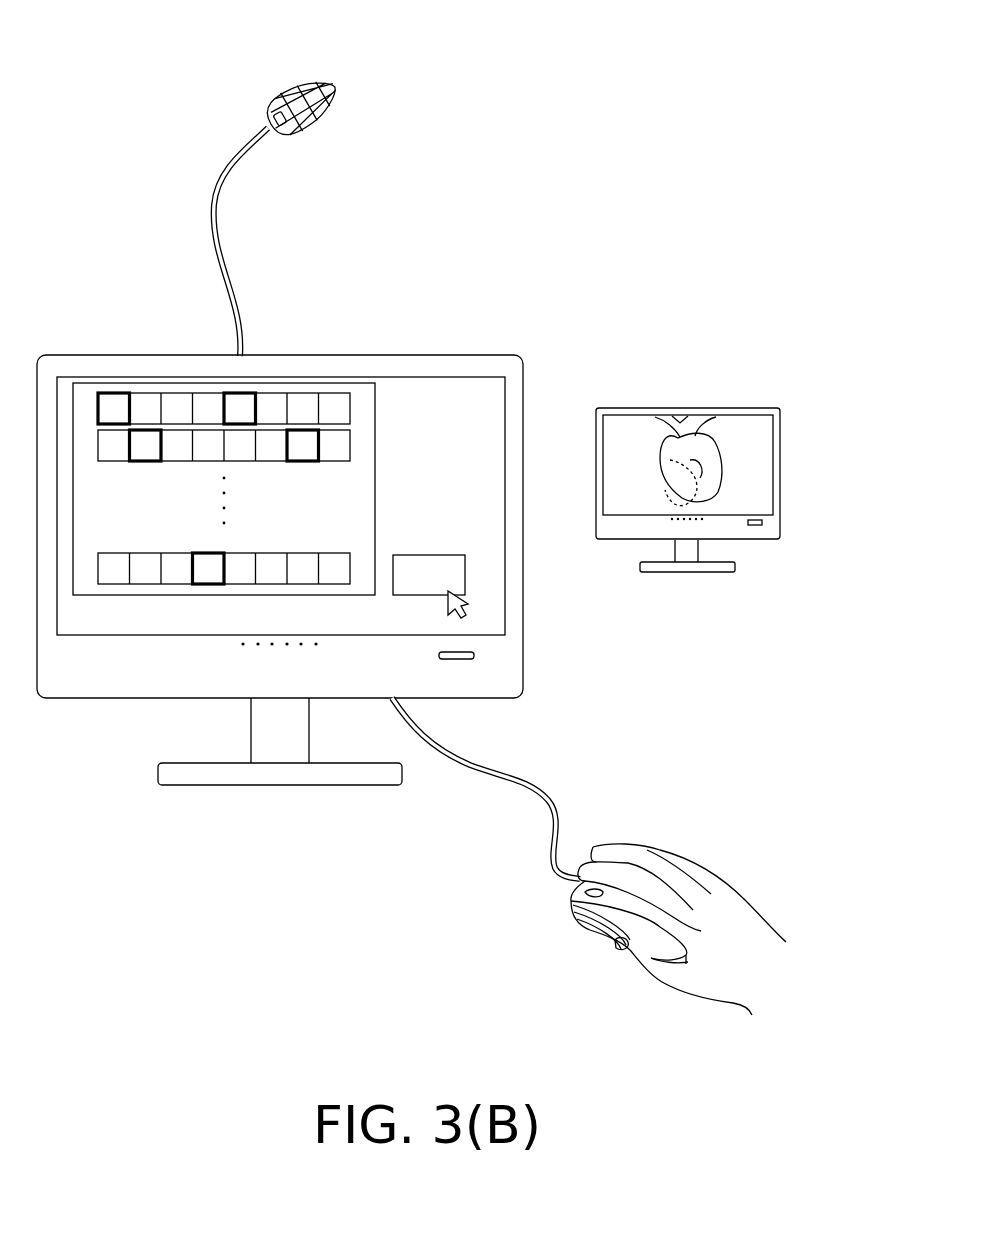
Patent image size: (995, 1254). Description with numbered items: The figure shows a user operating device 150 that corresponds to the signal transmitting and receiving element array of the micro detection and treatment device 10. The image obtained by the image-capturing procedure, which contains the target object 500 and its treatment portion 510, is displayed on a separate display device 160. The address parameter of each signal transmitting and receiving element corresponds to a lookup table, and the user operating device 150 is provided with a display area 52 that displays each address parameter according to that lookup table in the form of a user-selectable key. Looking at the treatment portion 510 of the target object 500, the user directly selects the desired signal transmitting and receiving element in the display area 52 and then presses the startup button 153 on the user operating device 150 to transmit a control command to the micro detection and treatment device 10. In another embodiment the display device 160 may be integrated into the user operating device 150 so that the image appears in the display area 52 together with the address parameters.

The micro detection and treatment device 10 is at (297, 88).
The display area 52 is at (355, 383).
The user operating device 150 is at (512, 386).
The startup button 153 is at (466, 572).
The display device 160 is at (738, 407).
The target object 500 is at (662, 459).
The treatment portion 510 is at (682, 492).